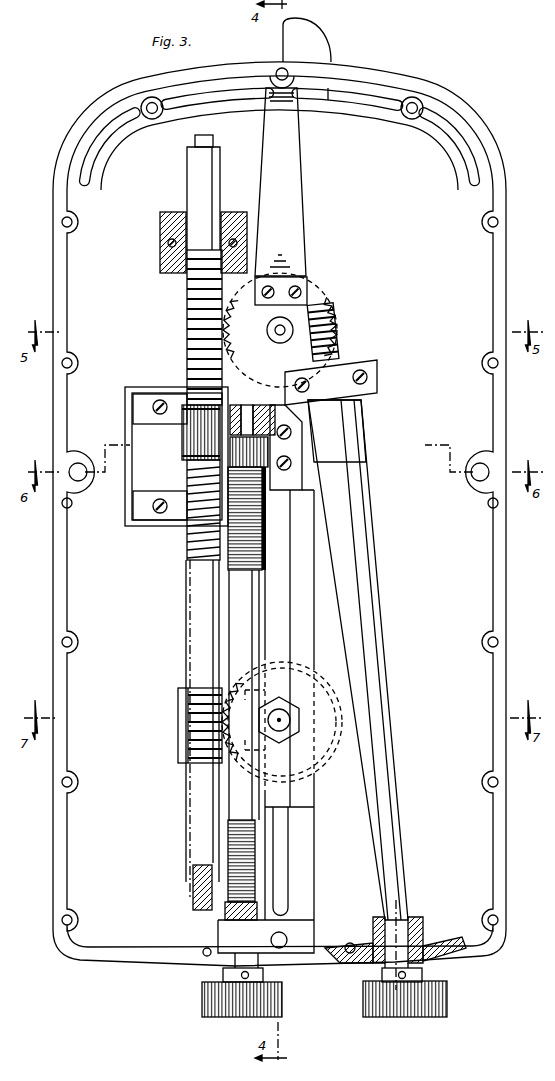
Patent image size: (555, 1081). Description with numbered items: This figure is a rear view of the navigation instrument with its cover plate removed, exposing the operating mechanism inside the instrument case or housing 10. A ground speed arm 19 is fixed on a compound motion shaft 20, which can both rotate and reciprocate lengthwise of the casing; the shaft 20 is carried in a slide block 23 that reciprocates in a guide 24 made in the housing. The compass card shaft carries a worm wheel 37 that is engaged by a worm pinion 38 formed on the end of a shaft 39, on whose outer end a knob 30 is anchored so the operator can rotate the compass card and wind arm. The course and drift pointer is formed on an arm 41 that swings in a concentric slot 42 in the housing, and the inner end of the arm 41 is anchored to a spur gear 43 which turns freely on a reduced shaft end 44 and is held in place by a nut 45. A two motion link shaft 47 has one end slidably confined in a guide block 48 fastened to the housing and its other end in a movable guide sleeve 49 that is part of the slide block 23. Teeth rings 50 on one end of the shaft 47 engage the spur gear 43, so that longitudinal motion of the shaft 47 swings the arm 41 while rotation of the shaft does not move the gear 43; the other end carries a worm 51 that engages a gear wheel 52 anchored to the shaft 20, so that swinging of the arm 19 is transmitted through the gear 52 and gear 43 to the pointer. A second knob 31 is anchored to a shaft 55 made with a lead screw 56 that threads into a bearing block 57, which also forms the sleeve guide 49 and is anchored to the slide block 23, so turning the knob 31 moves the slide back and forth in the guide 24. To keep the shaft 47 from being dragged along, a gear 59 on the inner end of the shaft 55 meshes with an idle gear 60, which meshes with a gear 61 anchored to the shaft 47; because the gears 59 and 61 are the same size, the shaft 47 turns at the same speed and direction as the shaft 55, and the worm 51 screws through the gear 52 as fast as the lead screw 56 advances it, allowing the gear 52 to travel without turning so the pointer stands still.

The instrument case or housing 10 is at (400, 95).
The ground speed arm 19 is at (318, 33).
The compound motion shaft 20 is at (283, 730).
The slide block 23 is at (314, 803).
The guide 24 is at (285, 868).
The knob 30 is at (395, 1019).
The knob 31 is at (216, 1019).
The worm wheel 37 is at (288, 378).
The worm pinion 38 is at (338, 325).
The shaft 39 is at (360, 486).
The arm 41 is at (292, 148).
The concentric slot 42 is at (403, 122).
The spur gear 43 is at (312, 283).
The reduced shaft end 44 is at (275, 334).
The nut 45 is at (271, 326).
The two motion link shaft 47 is at (187, 172).
The guide block 48 is at (162, 226).
The guide sleeve 49 is at (240, 692).
The teeth rings 50 is at (187, 316).
The worm 51 is at (188, 848).
The gear wheel 52 is at (330, 752).
The shaft 55 is at (263, 483).
The lead screw 56 is at (273, 838).
The bearing block 57 is at (266, 674).
The gear 59 is at (303, 440).
The idle gear 60 is at (200, 468).
The gear 61 is at (184, 433).